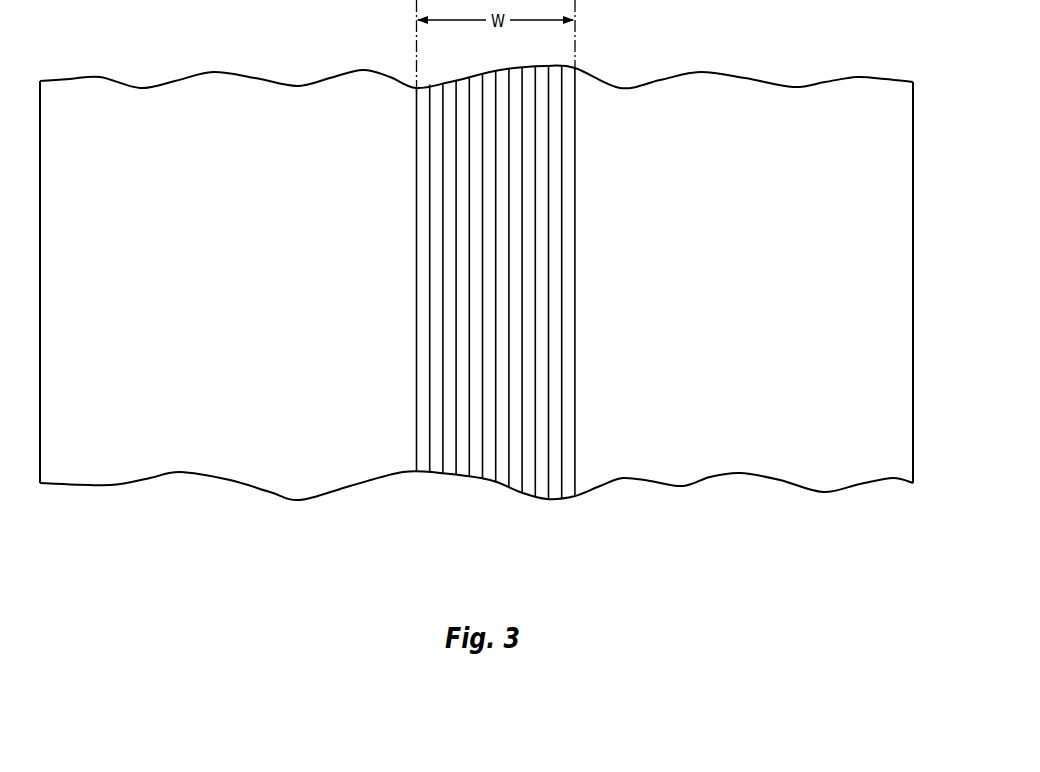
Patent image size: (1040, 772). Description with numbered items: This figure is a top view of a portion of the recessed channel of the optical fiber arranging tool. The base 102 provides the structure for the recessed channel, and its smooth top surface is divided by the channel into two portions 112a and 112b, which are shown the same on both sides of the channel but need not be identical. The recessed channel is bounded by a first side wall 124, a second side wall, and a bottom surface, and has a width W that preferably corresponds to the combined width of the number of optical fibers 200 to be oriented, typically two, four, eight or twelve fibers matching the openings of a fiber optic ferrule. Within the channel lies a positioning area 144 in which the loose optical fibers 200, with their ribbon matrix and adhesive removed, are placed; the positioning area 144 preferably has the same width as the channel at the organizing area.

The base 102 is at (875, 243).
The top surface portion 112a is at (757, 358).
The top surface portion 112b is at (275, 358).
The first side wall 124 is at (577, 291).
The positioning area 144 is at (666, 172).
The optical fibers 200 is at (543, 160).